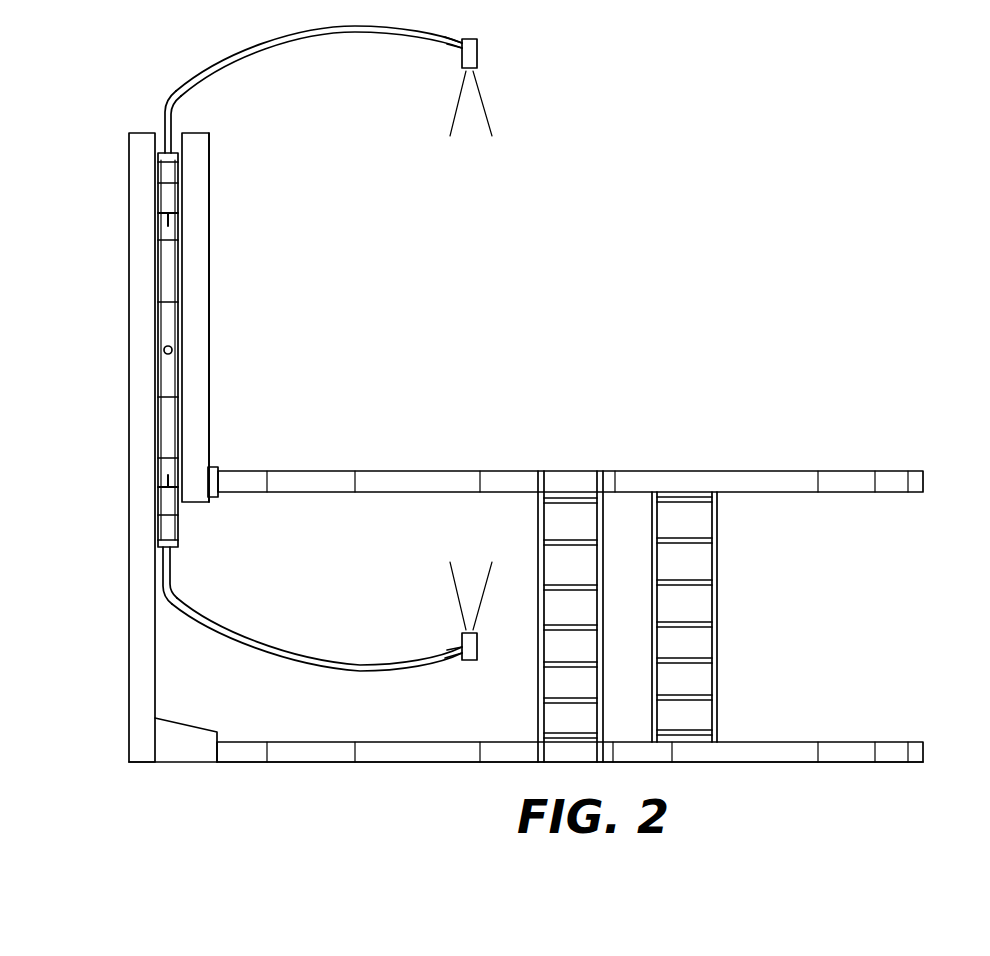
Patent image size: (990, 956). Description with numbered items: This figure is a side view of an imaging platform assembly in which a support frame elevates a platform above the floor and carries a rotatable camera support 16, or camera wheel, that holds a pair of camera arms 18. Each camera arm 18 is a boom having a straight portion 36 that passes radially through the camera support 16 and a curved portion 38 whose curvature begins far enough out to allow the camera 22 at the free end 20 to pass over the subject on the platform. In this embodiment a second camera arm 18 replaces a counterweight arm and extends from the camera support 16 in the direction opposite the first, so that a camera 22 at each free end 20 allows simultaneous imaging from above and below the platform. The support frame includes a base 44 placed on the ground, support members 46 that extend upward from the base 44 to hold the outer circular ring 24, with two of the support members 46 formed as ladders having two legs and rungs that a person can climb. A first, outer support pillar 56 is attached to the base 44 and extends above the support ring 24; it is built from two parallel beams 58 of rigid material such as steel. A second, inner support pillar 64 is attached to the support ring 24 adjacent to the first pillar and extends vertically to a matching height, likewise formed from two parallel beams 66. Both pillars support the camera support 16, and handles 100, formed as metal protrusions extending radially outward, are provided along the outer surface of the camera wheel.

The camera support 16 is at (180, 548).
The camera arm 18 is at (305, 45).
The free end 20 is at (462, 52).
The camera 22 is at (478, 57).
The outer circular ring 24 is at (897, 471).
The straight portion 36 is at (165, 132).
The curved portion 38 is at (370, 33).
The base 44 is at (890, 741).
The support members 46 is at (538, 530).
The first support pillar 56 is at (115, 623).
The beams 58 is at (129, 694).
The second support pillar 64 is at (215, 216).
The beams 66 is at (209, 274).
The handles 100 is at (168, 210).